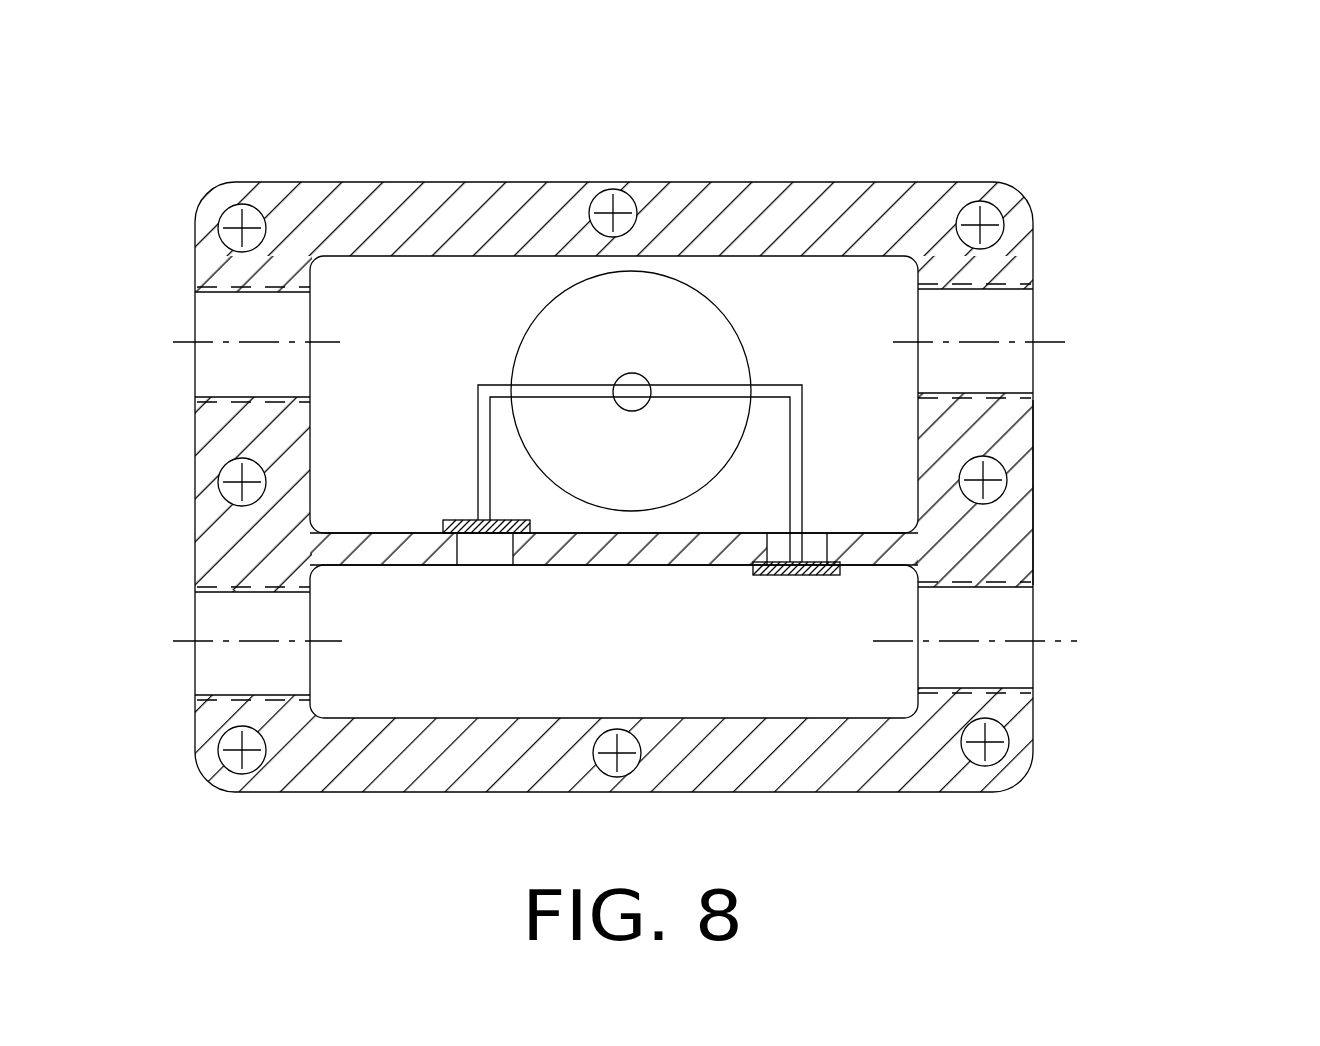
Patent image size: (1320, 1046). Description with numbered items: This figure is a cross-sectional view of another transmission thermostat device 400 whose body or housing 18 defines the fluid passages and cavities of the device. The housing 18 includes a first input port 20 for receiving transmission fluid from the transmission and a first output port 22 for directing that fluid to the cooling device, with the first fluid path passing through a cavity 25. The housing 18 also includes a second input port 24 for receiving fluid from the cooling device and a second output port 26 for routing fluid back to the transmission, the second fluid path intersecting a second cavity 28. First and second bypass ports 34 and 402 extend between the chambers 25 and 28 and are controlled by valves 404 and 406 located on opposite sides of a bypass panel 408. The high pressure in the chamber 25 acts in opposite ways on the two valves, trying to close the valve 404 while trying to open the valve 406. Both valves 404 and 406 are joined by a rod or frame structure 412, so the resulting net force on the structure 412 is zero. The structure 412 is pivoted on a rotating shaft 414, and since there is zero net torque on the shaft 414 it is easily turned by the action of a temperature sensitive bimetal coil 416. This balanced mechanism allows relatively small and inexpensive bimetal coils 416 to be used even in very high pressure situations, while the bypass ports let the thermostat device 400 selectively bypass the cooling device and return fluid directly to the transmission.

The thermostat device 400 is at (1107, 188).
The housing 18 is at (1037, 458).
The first input port 20 is at (1003, 385).
The first output port 22 is at (243, 390).
The second input port 24 is at (248, 682).
The second output port 26 is at (1007, 683).
The cavity 25 is at (427, 377).
The second cavity 28 is at (425, 632).
The bypass port 34 is at (895, 455).
The second bypass port 402 is at (513, 535).
The valve 404 is at (455, 520).
The valve 406 is at (827, 577).
The bypass panel 408 is at (680, 565).
The frame structure 412 is at (765, 385).
The rotating shaft 414 is at (617, 377).
The bimetal coil 416 is at (717, 305).